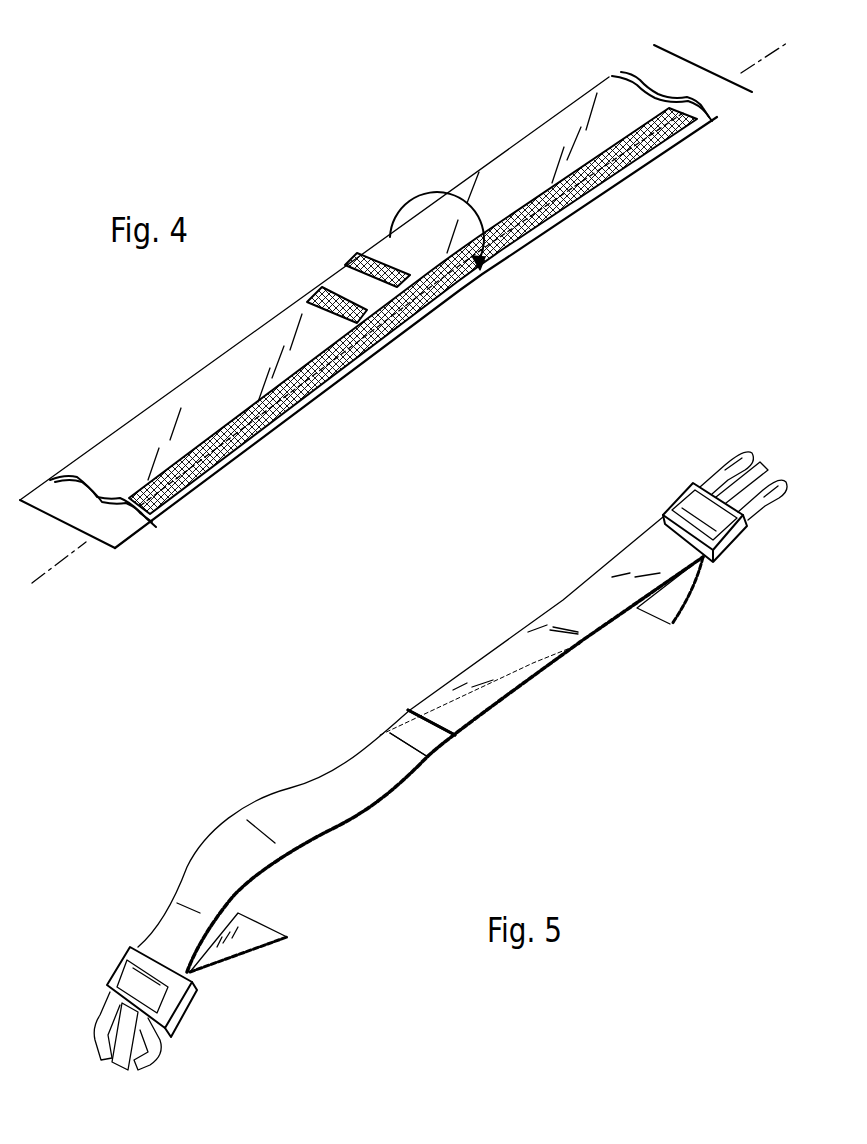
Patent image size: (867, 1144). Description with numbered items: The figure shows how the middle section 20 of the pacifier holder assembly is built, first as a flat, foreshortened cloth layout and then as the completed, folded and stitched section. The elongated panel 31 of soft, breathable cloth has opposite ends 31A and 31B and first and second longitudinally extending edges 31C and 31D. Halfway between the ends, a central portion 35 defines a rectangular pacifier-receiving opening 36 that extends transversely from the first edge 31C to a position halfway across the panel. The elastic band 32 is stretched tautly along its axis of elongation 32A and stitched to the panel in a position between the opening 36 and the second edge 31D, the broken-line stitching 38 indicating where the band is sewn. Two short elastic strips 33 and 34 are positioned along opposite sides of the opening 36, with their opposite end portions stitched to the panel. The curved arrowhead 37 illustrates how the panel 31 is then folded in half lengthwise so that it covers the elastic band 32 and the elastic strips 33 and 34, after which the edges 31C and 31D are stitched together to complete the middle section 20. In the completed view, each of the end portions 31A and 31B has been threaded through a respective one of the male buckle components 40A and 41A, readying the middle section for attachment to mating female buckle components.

In FIG. 4, the middle section 20 is at (104, 437).
In FIG. 5, the middle section 20 is at (170, 882).
In FIG. 4, the panel 31 is at (531, 157).
In FIG. 5, the panel 31 is at (443, 744).
In FIG. 4, the first end of panel 31A is at (128, 525).
In FIG. 5, the first end of panel 31A is at (267, 927).
In FIG. 4, the second end of panel 31B is at (691, 75).
In FIG. 5, the second end of panel 31B is at (663, 622).
In FIG. 4, the first longitudinally extending edge 31C is at (574, 102).
In FIG. 5, the first longitudinally extending edge 31C is at (387, 797).
In FIG. 4, the second longitudinally extending edge 31D is at (581, 208).
In FIG. 5, the second longitudinally extending edge 31D is at (468, 770).
In FIG. 4, the elastic band 32 is at (664, 143).
In FIG. 4, the axis of elongation 32A is at (38, 578).
In FIG. 4, the elastic strip 33 is at (313, 298).
In FIG. 4, the elastic strip 34 is at (360, 253).
In FIG. 4, the central portion 35 is at (317, 320).
In FIG. 5, the central portion 35 is at (395, 753).
In FIG. 5, the opening 36 is at (400, 723).
In FIG. 4, the curved arrowhead 37 is at (433, 193).
In FIG. 4, the stitching 38 is at (313, 395).
In FIG. 5, the first male buckle component 40A is at (175, 1008).
In FIG. 5, the second male buckle component 41A is at (668, 512).